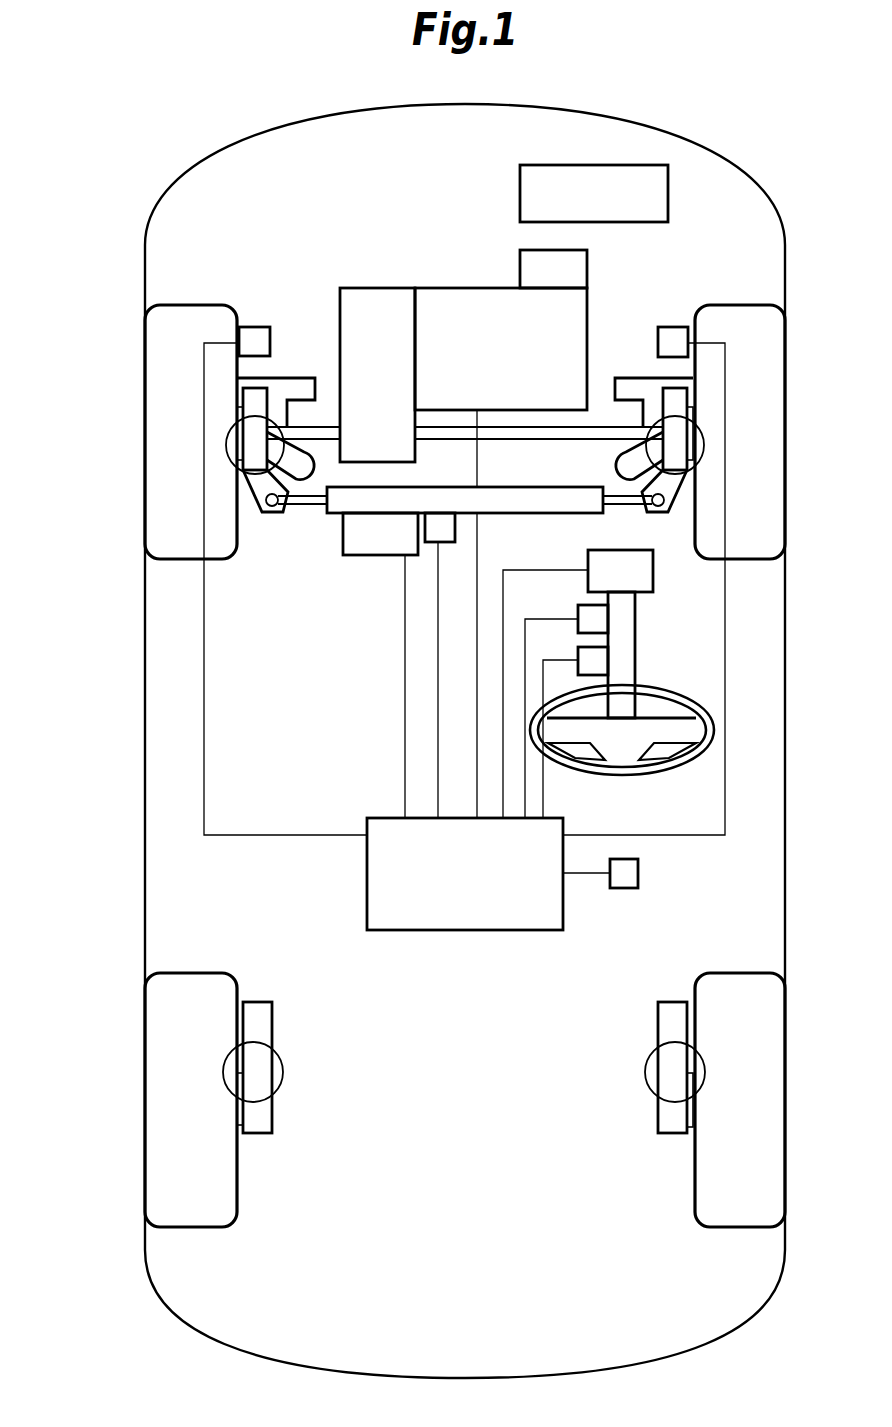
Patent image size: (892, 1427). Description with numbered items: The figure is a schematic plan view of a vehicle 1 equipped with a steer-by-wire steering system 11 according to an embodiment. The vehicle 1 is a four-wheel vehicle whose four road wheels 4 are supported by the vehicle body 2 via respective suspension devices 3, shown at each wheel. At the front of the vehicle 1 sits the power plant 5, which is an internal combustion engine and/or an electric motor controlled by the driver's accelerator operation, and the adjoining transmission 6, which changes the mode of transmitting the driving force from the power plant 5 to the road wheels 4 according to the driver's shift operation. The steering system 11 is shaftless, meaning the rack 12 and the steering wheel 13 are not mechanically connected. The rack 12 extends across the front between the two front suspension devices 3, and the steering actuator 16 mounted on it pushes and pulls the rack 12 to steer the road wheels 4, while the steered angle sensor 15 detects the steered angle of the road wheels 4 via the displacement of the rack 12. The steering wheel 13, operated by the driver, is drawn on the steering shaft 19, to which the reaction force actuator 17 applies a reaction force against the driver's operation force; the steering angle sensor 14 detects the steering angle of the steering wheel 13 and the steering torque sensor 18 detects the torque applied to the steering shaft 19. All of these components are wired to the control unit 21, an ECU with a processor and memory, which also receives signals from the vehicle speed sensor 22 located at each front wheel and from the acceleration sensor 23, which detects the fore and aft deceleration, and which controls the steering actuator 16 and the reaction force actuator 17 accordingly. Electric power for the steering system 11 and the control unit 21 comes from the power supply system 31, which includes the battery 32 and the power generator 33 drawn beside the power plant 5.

The vehicle 1 is at (437, 726).
The vehicle body 2 is at (145, 257).
The suspension device 3 is at (297, 372).
The road wheel 4 is at (190, 304).
The power plant 5 is at (432, 288).
The transmission 6 is at (361, 288).
The steering system 11 is at (426, 549).
The rack 12 is at (495, 487).
The steering wheel 13 is at (618, 777).
The steering angle sensor 14 is at (610, 660).
The steered angle sensor 15 is at (433, 545).
The steering actuator 16 is at (343, 535).
The reaction force actuator 17 is at (588, 562).
The steering torque sensor 18 is at (610, 617).
The steering shaft 19 is at (637, 647).
The control unit 21 is at (505, 930).
The vehicle speed sensor 22 is at (258, 327).
The acceleration sensor 23 is at (640, 870).
The power supply system 31 is at (461, 293).
The battery 32 is at (556, 165).
The power generator 33 is at (520, 266).